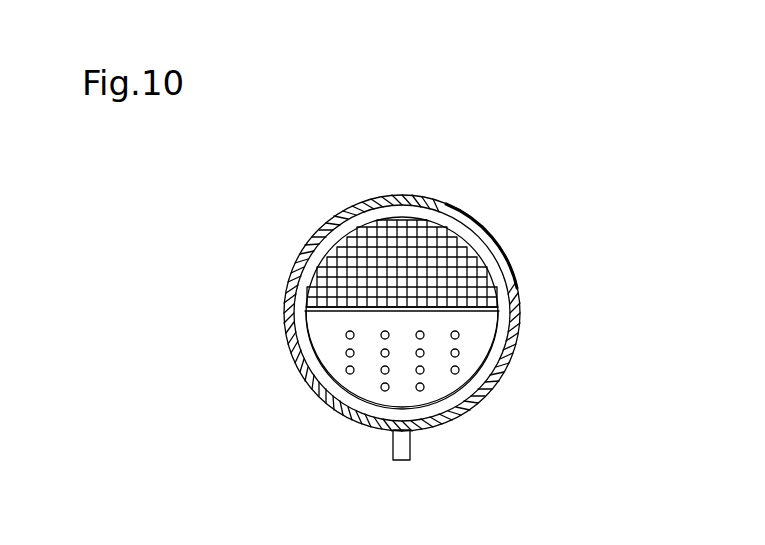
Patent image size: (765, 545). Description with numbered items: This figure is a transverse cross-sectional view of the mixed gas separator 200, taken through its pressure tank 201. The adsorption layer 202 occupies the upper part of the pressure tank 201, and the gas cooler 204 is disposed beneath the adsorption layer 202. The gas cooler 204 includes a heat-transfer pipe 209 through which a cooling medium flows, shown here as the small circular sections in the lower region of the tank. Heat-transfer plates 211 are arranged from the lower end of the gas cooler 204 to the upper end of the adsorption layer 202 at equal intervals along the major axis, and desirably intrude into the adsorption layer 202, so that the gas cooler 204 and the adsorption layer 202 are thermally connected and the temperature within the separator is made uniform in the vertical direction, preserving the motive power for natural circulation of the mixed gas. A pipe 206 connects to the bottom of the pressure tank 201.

The mixed gas separator 200 is at (412, 313).
The pressure tank 201 is at (458, 209).
The adsorption layer 202 is at (478, 273).
The gas cooler 204 is at (472, 362).
The pipe 206 is at (410, 447).
The heat-transfer pipe 209 is at (383, 391).
The heat-transfer plates 211 is at (328, 350).